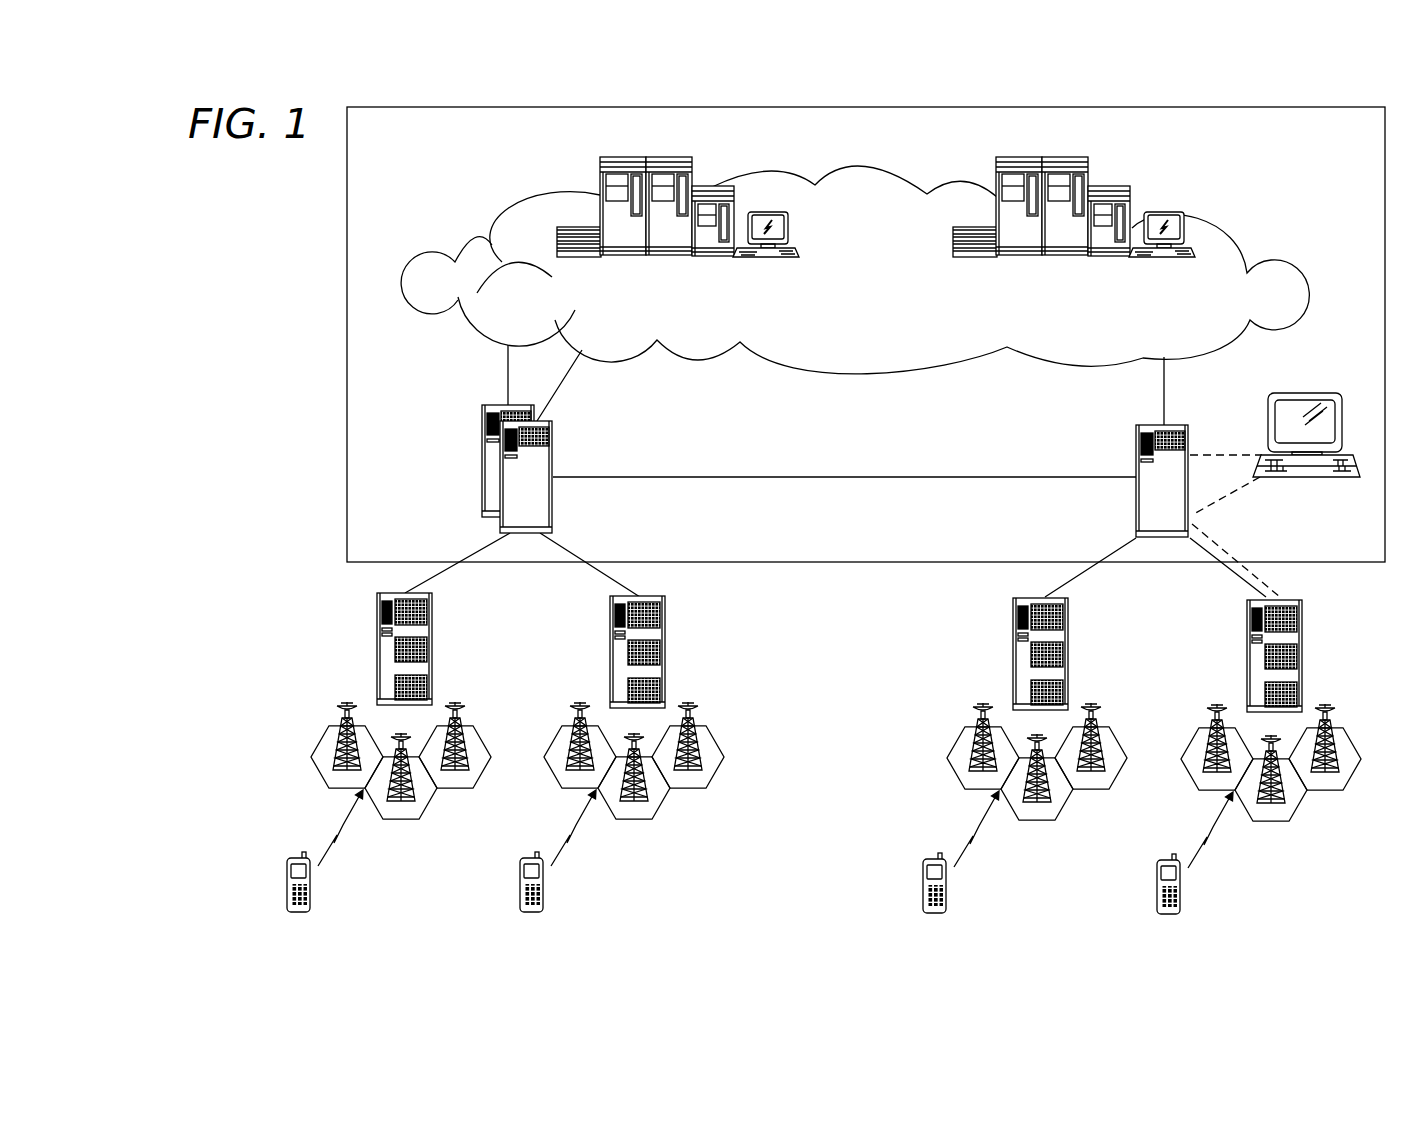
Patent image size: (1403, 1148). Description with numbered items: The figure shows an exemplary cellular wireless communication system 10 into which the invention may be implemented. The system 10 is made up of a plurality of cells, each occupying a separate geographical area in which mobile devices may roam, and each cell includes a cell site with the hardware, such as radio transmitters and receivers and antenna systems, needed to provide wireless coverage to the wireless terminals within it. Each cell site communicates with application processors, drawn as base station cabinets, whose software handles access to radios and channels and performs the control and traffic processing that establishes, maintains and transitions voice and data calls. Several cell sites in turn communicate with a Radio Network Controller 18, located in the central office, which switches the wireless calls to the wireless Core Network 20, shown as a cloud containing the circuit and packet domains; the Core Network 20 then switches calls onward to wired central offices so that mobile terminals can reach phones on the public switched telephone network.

The cellular wireless communication system 10 is at (788, 510).
The radio network controller 18 is at (553, 448).
The core network 20 is at (823, 369).